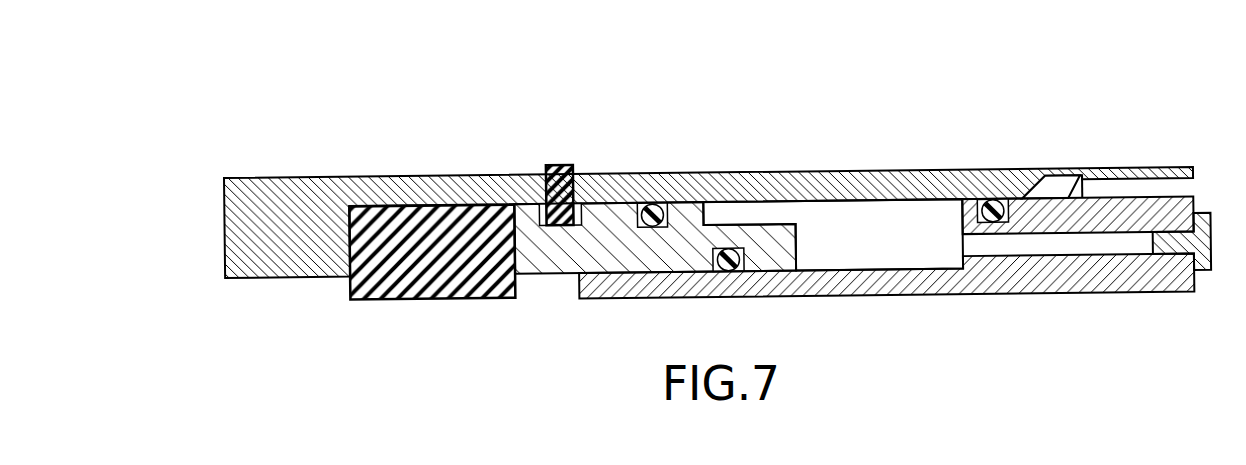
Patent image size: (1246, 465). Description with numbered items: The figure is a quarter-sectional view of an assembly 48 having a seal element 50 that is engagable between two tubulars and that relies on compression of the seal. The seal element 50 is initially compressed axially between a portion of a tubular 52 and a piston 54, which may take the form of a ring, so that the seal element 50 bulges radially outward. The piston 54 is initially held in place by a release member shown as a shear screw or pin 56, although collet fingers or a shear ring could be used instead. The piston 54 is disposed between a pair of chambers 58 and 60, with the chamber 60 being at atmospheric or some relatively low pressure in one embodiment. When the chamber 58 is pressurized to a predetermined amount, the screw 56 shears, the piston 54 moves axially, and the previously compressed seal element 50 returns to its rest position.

The assembly 48 is at (173, 128).
The seal element 50 is at (400, 288).
The tubular 52 is at (385, 190).
The piston 54 is at (683, 222).
The shear screw or pin 56 is at (560, 172).
The chamber 58 is at (568, 337).
The chamber 60 is at (898, 252).